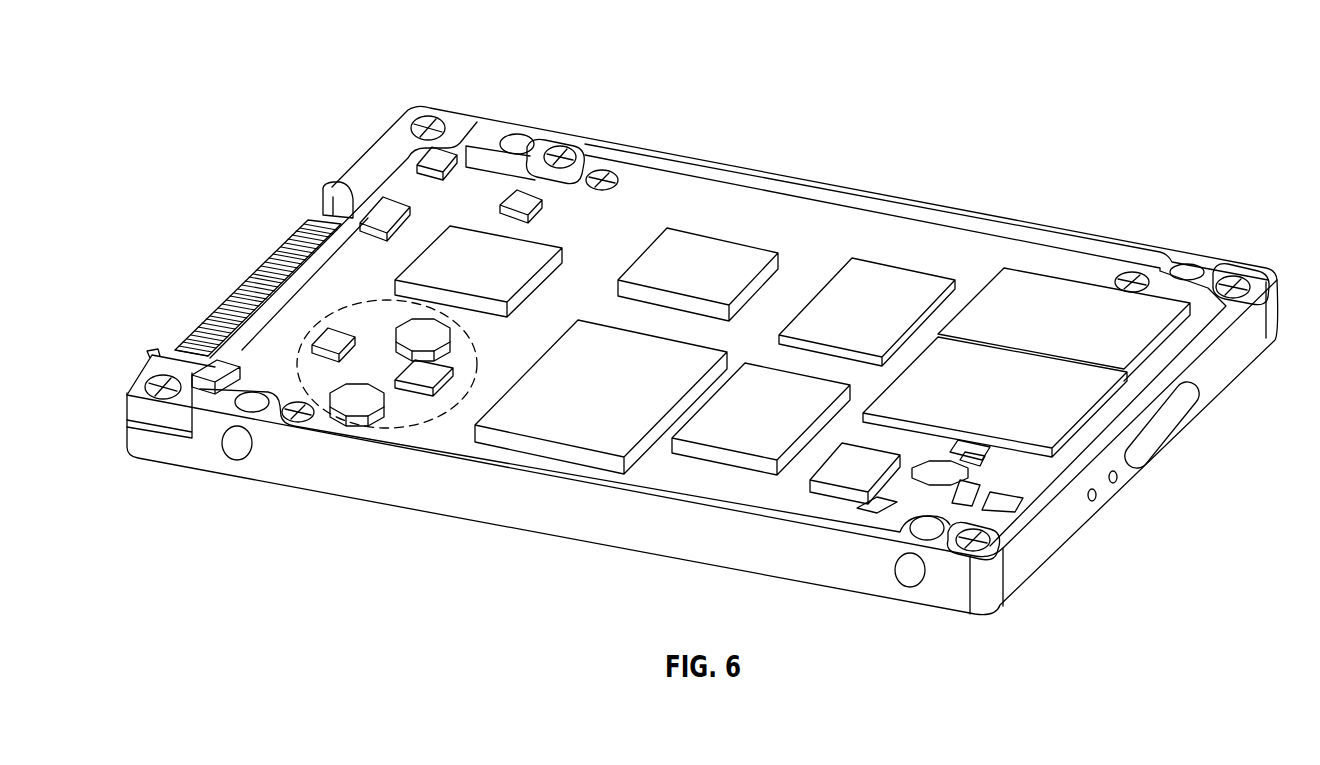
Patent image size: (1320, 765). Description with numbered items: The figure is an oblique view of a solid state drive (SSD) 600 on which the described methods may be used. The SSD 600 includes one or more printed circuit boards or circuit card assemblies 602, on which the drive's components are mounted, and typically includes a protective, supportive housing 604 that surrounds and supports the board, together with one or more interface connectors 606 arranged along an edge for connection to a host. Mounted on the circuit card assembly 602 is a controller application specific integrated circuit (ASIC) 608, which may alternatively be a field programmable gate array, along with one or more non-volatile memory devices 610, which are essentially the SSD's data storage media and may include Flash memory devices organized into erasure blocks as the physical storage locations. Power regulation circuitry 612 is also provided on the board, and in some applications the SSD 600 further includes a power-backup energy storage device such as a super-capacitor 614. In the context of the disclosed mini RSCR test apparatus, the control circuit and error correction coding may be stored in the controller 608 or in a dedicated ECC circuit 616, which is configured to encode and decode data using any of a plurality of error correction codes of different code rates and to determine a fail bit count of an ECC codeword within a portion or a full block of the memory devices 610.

The solid state drive 600 is at (1134, 91).
The printed circuit board 602 is at (787, 222).
The housing 604 is at (428, 497).
The interface connector 606 is at (220, 312).
The controller application specific integrated circuit 608 is at (455, 253).
The non-volatile memory devices 610 is at (817, 387).
The power regulation circuitry 612 is at (350, 308).
The super-capacitor 614 is at (600, 455).
The dedicated ECC circuit 616 is at (685, 247).